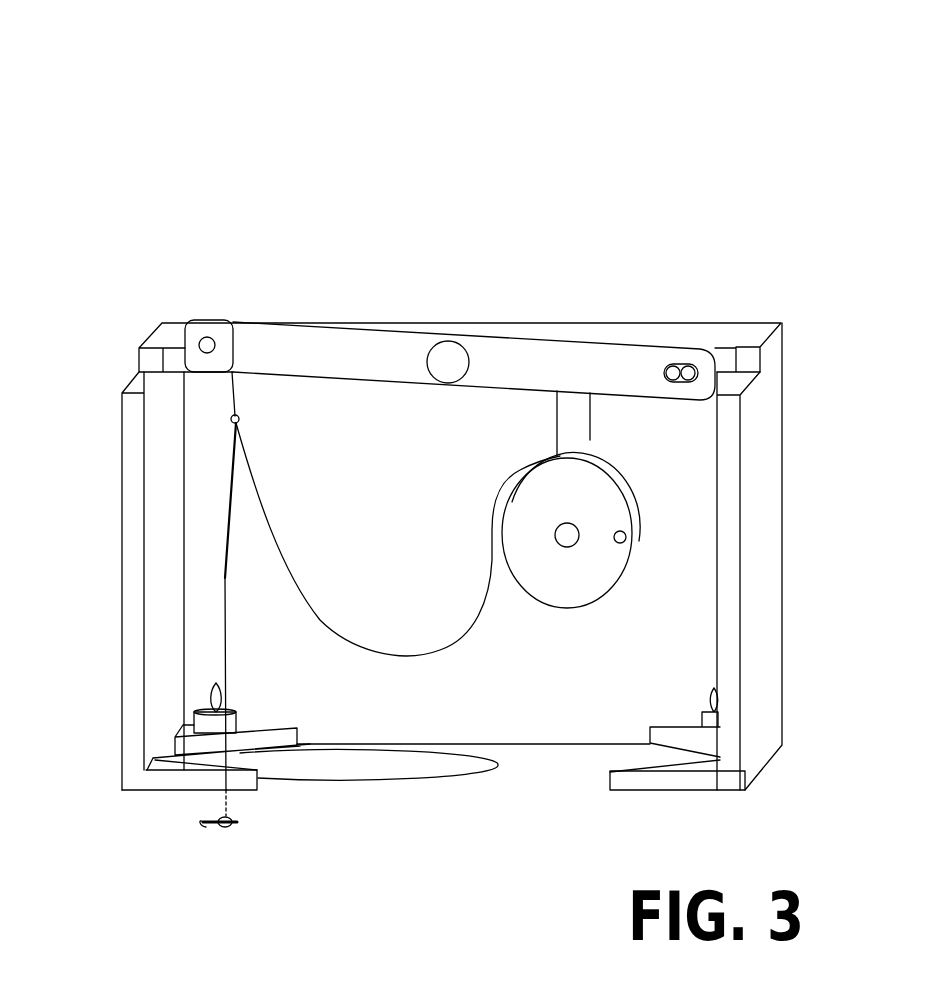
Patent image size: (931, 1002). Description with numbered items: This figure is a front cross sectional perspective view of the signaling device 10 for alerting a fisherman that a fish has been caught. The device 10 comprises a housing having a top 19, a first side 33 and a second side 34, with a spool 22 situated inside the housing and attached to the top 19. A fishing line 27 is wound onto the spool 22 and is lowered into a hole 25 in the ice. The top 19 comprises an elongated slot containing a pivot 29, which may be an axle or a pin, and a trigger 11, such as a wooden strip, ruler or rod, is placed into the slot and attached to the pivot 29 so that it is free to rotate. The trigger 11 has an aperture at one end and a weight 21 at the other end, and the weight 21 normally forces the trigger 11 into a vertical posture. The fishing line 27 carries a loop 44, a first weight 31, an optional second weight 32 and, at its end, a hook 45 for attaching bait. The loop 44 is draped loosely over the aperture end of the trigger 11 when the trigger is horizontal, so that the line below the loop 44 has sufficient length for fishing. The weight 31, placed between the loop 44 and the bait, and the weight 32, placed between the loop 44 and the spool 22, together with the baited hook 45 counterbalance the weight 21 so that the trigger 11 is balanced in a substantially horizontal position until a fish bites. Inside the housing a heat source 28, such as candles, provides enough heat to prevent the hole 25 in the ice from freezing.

The device 10 is at (214, 142).
The trigger 11 is at (271, 345).
The top 19 is at (552, 335).
The weight 21 is at (690, 368).
The spool 22 is at (582, 575).
The hole 25 is at (385, 765).
The fishing line 27 is at (225, 578).
The heat source 28 is at (216, 697).
The pivot 29 is at (450, 360).
The weight 31 is at (238, 424).
The weight 32 is at (223, 623).
The first side 33 is at (131, 465).
The second side 34 is at (763, 542).
The loop 44 is at (232, 372).
The hook 45 is at (226, 827).